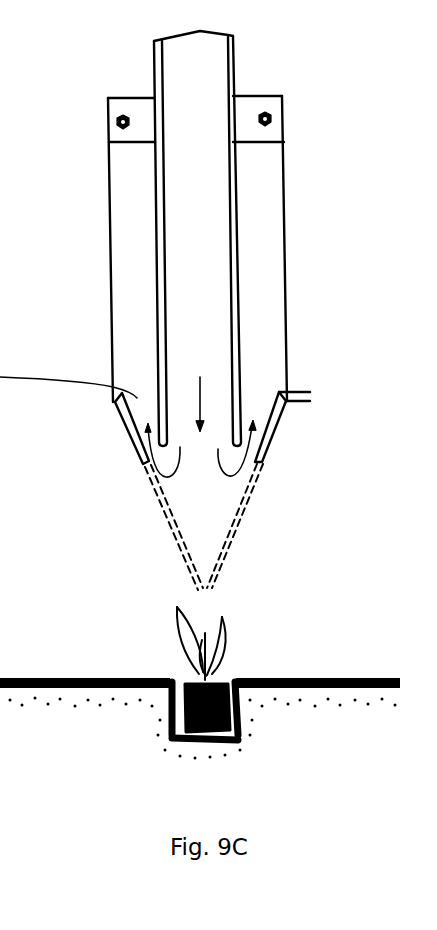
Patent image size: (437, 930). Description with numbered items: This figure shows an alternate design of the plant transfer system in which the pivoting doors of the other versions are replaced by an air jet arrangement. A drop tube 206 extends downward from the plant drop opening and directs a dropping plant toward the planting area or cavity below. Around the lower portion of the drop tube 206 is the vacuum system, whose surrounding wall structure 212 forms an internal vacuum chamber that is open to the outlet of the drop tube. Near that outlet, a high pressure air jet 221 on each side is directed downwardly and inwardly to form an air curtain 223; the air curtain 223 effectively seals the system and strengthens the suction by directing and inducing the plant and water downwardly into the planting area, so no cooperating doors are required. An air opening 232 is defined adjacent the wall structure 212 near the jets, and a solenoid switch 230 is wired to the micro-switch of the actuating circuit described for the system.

The drop tube 206 is at (111, 249).
The surrounding wall structure 212 is at (286, 233).
The high pressure air jet 221 is at (131, 443).
The air curtain 223 is at (173, 552).
The solenoid switch 230 is at (0, 515).
The air opening 232 is at (257, 402).